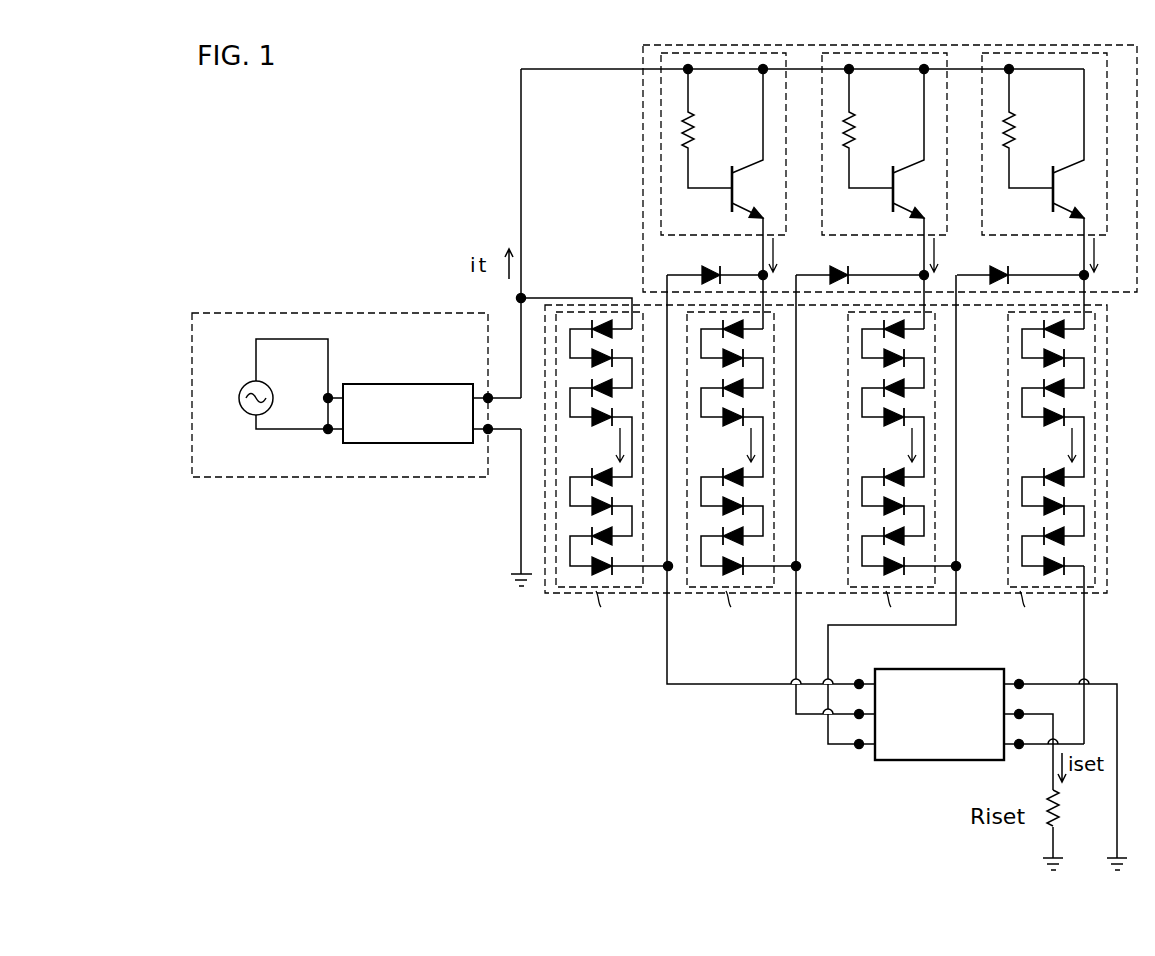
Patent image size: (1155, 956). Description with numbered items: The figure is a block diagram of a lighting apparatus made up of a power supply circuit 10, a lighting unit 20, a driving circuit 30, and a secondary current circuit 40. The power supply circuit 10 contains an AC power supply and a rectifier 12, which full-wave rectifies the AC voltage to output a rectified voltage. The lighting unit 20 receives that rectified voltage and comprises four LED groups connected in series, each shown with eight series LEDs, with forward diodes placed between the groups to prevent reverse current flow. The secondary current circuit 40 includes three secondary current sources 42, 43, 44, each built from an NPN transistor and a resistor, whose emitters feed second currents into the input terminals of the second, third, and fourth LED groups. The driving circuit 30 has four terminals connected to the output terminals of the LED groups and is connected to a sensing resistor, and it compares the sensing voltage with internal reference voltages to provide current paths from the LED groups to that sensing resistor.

The power supply circuit 10 is at (342, 411).
The rectifier 12 is at (413, 384).
The lighting unit 20 is at (569, 596).
The driving circuit 30 is at (935, 762).
The secondary current circuit 40 is at (869, 187).
The secondary current source 42 is at (755, 235).
The secondary current source 43 is at (900, 235).
The secondary current source 44 is at (1062, 235).